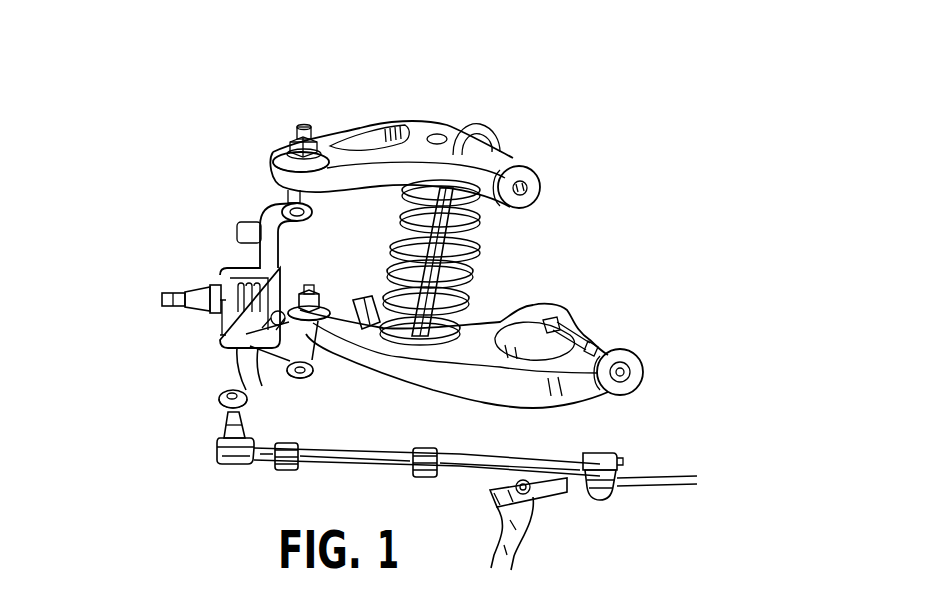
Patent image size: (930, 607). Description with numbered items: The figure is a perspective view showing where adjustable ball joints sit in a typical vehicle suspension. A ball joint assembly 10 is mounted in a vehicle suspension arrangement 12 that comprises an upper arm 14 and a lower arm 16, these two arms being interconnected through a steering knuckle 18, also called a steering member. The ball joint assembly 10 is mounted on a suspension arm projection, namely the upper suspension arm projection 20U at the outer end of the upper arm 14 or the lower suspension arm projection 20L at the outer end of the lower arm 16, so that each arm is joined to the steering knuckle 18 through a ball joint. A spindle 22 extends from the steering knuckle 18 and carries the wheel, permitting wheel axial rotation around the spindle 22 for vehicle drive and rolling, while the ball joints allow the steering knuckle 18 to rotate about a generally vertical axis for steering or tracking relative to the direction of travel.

The ball joint assembly 10 is at (312, 125).
The vehicle suspension arrangement 12 is at (537, 172).
The upper arm 14 is at (413, 120).
The lower arm 16 is at (484, 322).
The steering knuckle 18 is at (235, 278).
The upper suspension arm projection 20U is at (265, 160).
The lower suspension arm projection 20L is at (306, 340).
The spindle 22 is at (160, 298).